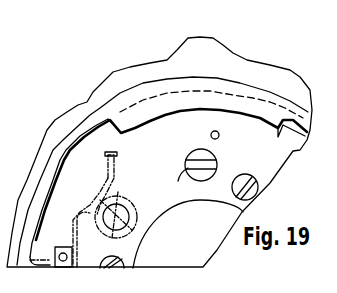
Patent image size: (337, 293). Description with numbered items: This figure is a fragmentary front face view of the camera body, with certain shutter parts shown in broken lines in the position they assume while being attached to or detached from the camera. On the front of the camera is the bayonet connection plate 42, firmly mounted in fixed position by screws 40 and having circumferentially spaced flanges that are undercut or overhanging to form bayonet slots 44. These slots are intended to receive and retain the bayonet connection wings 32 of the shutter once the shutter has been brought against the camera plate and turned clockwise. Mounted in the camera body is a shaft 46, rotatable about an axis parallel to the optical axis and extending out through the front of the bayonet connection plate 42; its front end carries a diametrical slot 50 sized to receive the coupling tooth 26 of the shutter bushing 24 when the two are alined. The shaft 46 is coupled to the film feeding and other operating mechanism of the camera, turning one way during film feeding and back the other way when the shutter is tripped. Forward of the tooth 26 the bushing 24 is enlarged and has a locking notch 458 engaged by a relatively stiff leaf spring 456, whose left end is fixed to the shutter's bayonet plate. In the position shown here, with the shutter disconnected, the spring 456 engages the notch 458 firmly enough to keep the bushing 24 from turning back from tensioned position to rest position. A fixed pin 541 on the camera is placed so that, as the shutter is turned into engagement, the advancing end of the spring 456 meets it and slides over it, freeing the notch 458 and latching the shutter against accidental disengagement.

The bushing 24 is at (116, 183).
The coupling tooth 26 is at (128, 207).
The bayonet connection wings 32 is at (68, 158).
The screws 40 is at (247, 176).
The bayonet connection plate 42 is at (280, 143).
The bayonet slots 44 is at (232, 97).
The shaft 46 is at (195, 155).
The diametrical slot 50 is at (178, 183).
The leaf spring 456 is at (80, 212).
The locking notch 458 is at (88, 232).
The fixed pin 541 is at (219, 135).